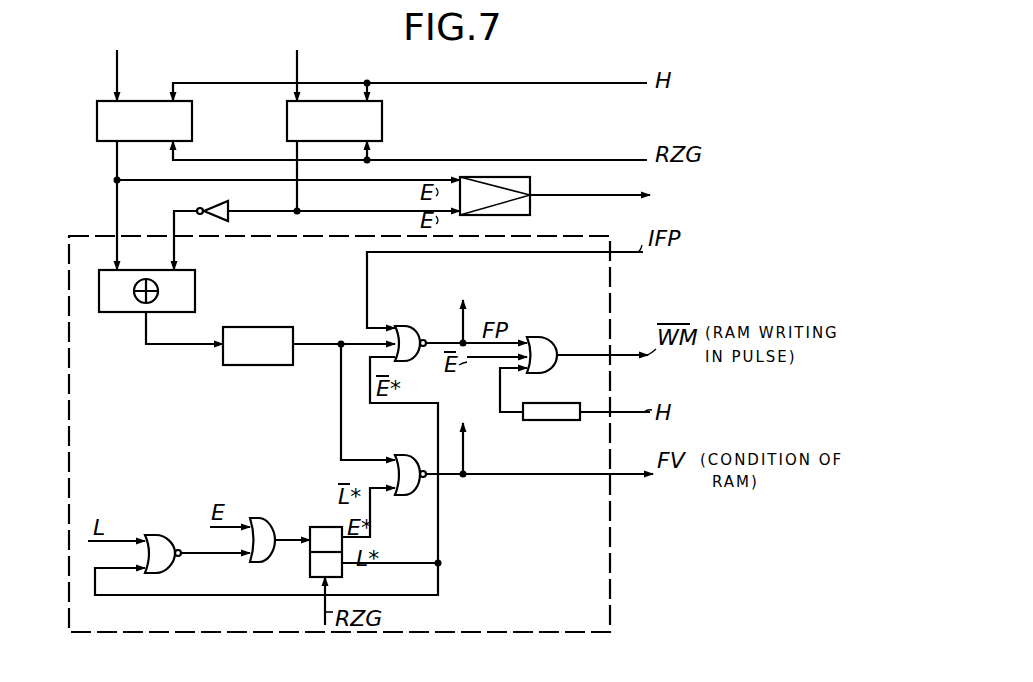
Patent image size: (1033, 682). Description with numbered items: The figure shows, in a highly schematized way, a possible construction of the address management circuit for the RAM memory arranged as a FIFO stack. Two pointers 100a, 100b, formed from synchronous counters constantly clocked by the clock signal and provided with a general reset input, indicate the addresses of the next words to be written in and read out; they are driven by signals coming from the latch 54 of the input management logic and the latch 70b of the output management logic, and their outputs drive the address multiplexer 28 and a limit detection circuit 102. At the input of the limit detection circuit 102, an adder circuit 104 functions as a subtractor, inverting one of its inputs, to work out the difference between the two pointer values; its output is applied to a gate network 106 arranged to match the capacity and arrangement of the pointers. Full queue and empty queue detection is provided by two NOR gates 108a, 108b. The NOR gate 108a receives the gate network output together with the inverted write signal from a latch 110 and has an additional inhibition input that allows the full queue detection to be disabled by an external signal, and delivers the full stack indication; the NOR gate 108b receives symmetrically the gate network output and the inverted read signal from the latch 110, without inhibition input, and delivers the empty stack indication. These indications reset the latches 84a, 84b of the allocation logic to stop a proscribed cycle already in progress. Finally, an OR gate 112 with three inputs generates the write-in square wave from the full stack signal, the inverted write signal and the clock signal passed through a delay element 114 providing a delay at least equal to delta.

The latch 54 is at (121, 48).
The latch 70b is at (301, 48).
The read and write pointer 100a is at (192, 121).
The read and write pointer 100b is at (382, 121).
The address multiplexer 28 is at (530, 183).
The limit detection circuit 102 is at (603, 585).
The adder circuit 104 is at (190, 286).
The gate network 106 is at (258, 325).
The NOR gate 108a is at (412, 313).
The NOR gate 108b is at (405, 442).
The latch 84a is at (472, 292).
The latch 84b is at (472, 415).
The latch 110 is at (312, 527).
The OR gate 112 is at (545, 345).
The delay element 114 is at (562, 398).